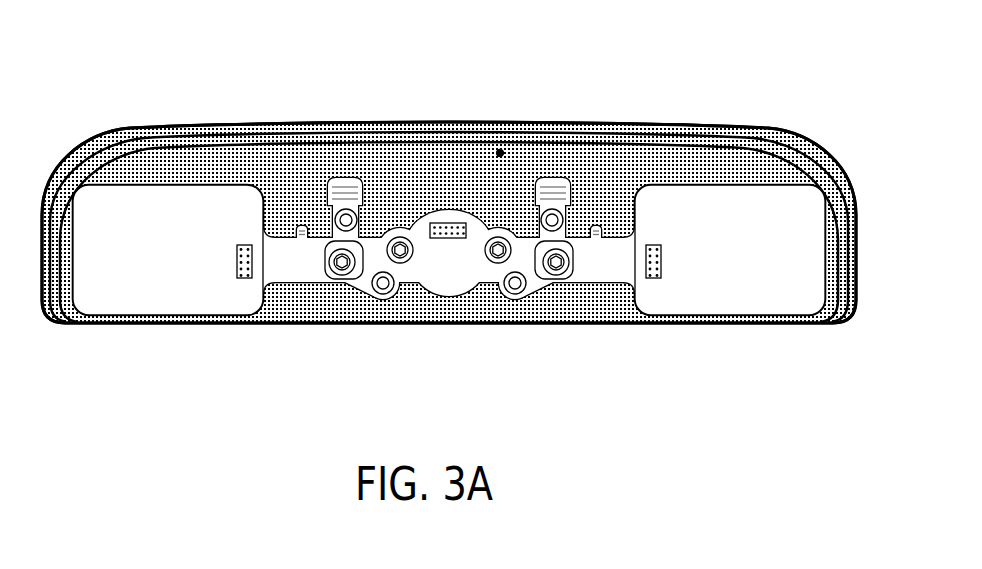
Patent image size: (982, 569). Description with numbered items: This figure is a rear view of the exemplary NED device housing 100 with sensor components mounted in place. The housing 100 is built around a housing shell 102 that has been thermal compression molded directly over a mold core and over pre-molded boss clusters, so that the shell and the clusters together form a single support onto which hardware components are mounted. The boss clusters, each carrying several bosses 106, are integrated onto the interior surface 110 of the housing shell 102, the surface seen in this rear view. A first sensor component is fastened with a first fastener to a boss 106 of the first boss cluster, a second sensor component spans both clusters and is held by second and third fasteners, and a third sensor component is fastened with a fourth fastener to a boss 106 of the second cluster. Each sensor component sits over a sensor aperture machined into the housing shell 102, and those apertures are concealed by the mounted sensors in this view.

The NED device housing 100 is at (143, 118).
The housing shell 102 is at (683, 123).
The boss 106 is at (517, 292).
The interior surface 110 is at (499, 151).